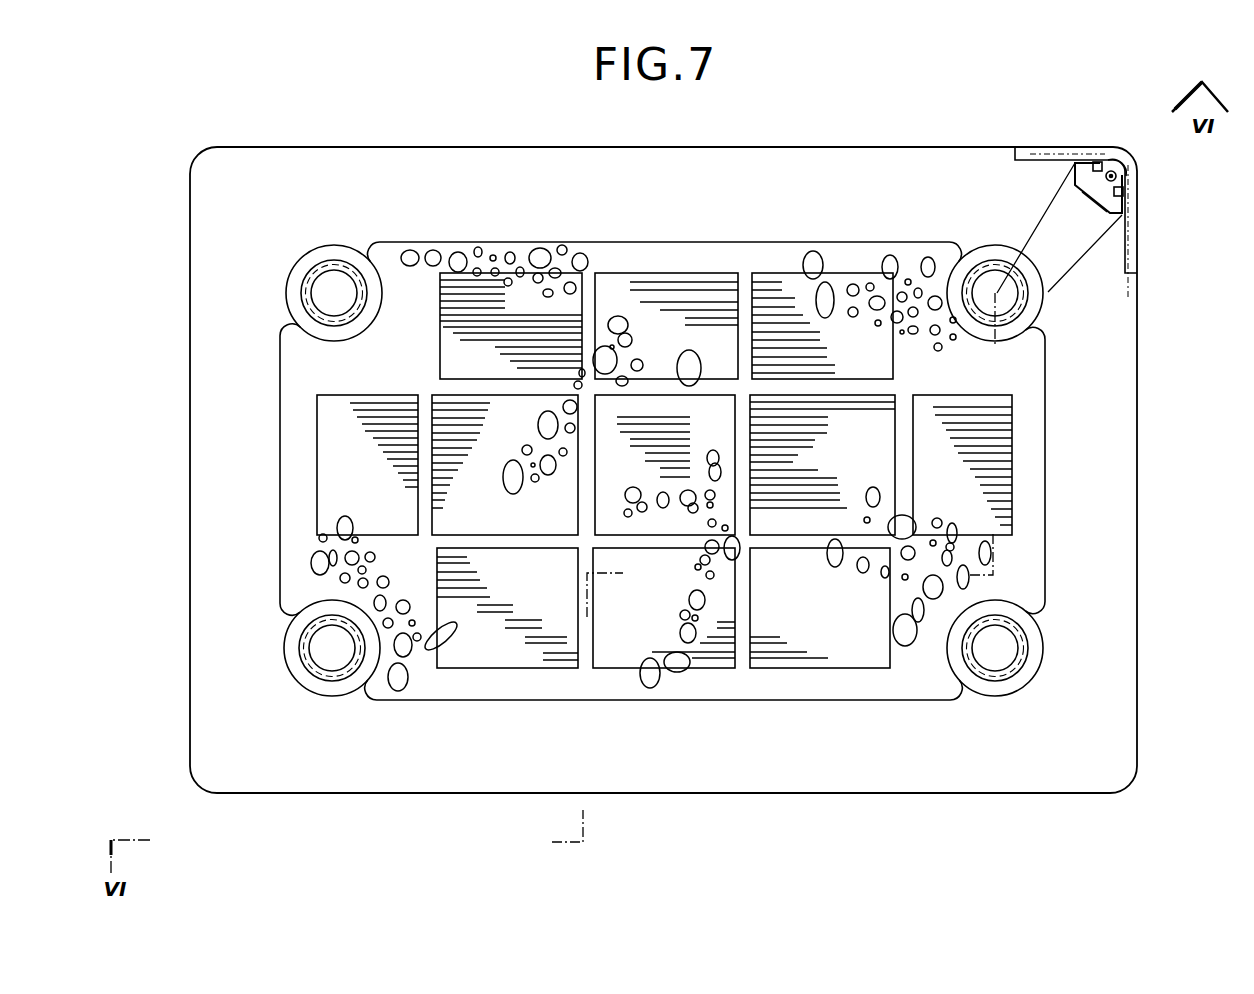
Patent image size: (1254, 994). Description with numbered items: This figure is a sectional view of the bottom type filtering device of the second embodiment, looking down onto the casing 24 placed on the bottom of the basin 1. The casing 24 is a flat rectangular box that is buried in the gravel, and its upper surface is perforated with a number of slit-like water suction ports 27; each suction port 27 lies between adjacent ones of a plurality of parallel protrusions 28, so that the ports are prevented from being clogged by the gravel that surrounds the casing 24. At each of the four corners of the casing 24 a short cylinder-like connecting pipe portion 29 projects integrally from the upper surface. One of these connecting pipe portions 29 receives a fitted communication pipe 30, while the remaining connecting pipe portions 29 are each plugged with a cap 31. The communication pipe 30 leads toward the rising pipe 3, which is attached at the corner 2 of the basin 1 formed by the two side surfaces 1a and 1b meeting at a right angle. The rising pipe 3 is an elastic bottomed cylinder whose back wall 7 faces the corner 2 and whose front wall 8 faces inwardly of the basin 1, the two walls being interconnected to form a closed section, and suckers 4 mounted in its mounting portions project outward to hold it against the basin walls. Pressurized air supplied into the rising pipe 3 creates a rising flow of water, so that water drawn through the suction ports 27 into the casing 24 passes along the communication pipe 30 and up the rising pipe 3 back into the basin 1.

The basin 1 is at (188, 450).
The side surface 1a is at (1035, 147).
The side surface 1b is at (1121, 240).
The corner 2 is at (1113, 150).
The rising pipe 3 is at (1067, 187).
The sucker 4 is at (1096, 162).
The back wall 7 is at (1117, 176).
The front wall 8 is at (1092, 203).
The casing 24 is at (541, 693).
The water suction port 27 is at (752, 367).
The protrusion 28 is at (752, 428).
The connecting pipe portion 29 is at (338, 270).
The communication pipe 30 is at (1013, 226).
The cap 31 is at (325, 285).